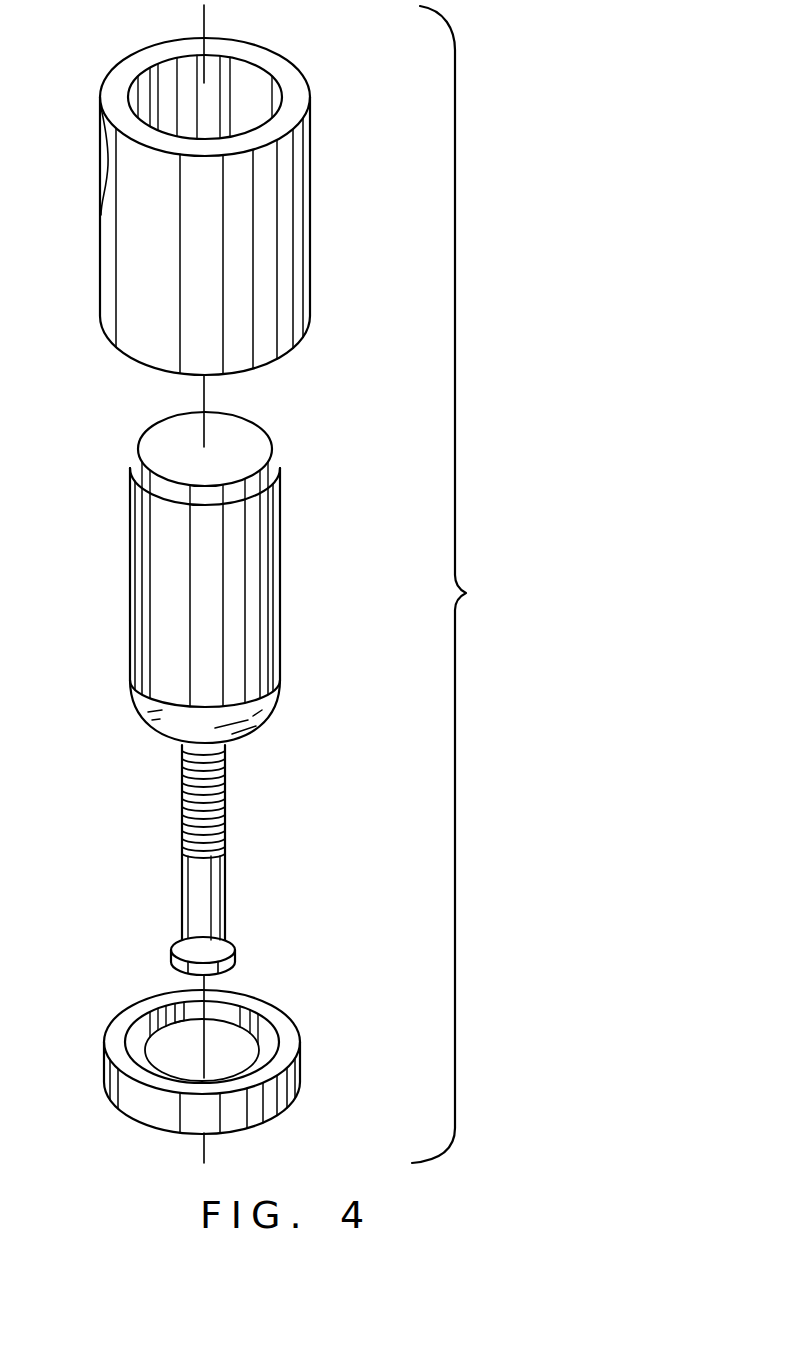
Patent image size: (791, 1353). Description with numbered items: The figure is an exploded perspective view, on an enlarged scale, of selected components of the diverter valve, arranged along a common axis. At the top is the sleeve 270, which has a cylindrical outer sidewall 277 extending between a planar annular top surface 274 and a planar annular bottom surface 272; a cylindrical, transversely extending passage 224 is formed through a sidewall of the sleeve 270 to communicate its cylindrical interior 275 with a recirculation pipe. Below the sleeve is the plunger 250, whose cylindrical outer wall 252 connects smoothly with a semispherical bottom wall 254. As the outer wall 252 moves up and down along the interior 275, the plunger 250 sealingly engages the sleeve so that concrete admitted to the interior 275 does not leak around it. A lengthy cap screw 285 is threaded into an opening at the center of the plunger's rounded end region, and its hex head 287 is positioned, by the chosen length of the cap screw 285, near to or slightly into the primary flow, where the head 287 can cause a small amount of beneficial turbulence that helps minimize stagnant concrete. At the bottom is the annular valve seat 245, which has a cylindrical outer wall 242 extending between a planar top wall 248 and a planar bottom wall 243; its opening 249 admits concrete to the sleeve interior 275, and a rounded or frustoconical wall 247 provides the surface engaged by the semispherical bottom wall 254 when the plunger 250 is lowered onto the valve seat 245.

The passage 224 is at (106, 162).
The sleeve 270 is at (231, 193).
The bottom surface 272 is at (290, 350).
The top surface 274 is at (293, 78).
The cylindrical interior 275 is at (246, 80).
The cylindrical outer sidewall 277 is at (285, 222).
The plunger 250 is at (239, 577).
The cylindrical outer wall 252 is at (150, 543).
The semispherical bottom wall 254 is at (258, 734).
The cap screw 285 is at (213, 876).
The hex head 287 is at (230, 958).
The valve seat 245 is at (216, 1059).
The rounded or frustoconical wall 247 is at (132, 1047).
The top wall 248 is at (293, 1042).
The opening 249 is at (183, 1029).
The cylindrical outer wall 242 is at (164, 1118).
The bottom wall 243 is at (266, 1125).